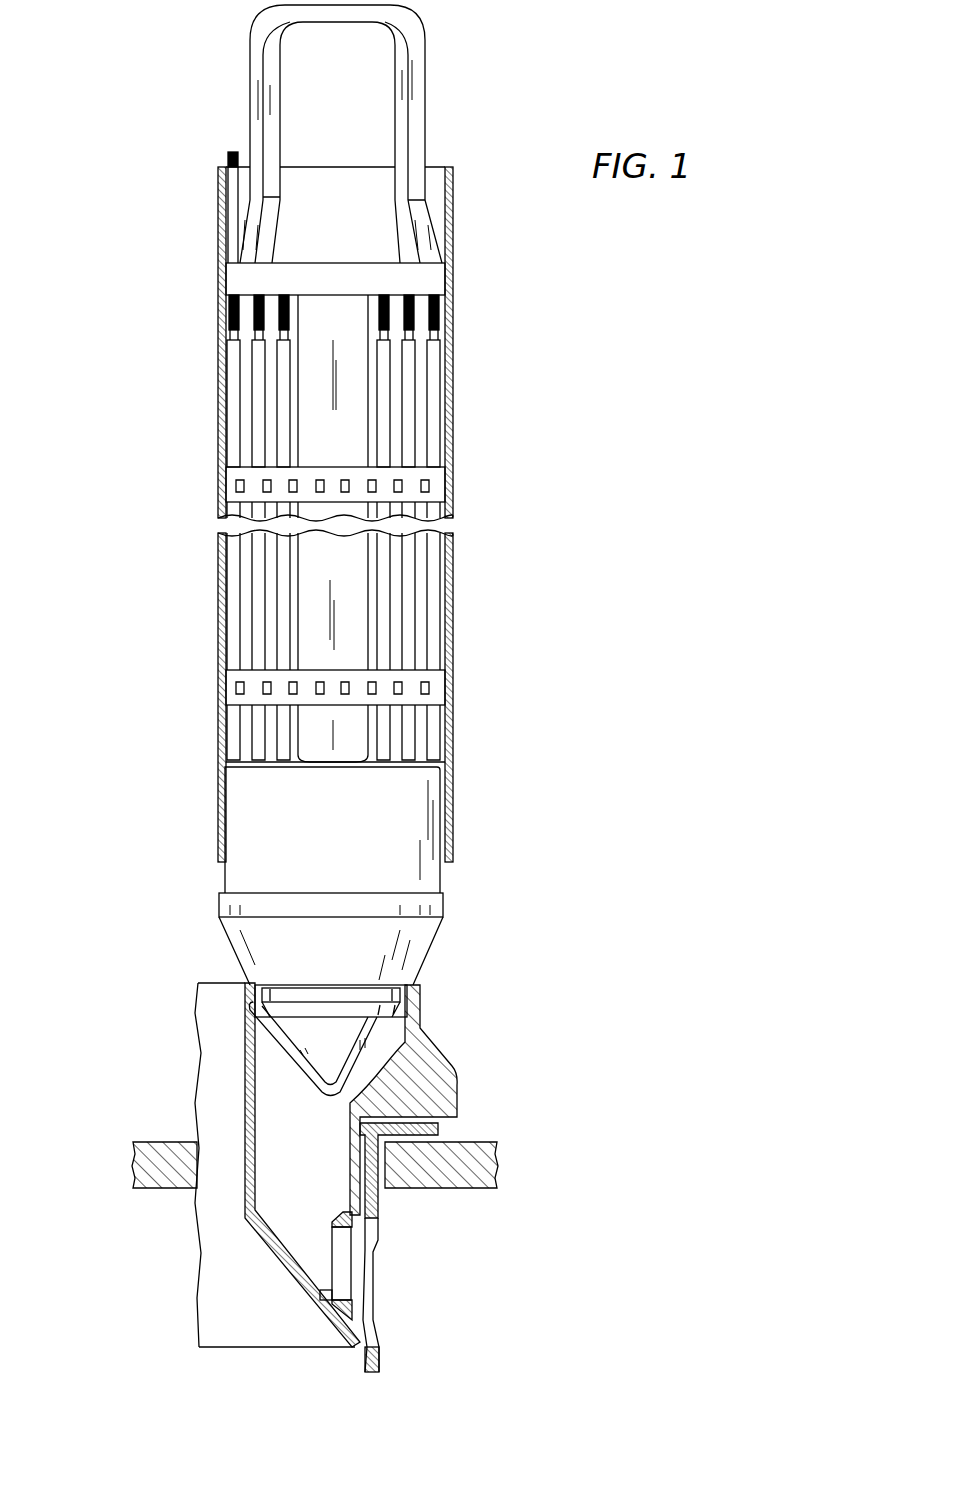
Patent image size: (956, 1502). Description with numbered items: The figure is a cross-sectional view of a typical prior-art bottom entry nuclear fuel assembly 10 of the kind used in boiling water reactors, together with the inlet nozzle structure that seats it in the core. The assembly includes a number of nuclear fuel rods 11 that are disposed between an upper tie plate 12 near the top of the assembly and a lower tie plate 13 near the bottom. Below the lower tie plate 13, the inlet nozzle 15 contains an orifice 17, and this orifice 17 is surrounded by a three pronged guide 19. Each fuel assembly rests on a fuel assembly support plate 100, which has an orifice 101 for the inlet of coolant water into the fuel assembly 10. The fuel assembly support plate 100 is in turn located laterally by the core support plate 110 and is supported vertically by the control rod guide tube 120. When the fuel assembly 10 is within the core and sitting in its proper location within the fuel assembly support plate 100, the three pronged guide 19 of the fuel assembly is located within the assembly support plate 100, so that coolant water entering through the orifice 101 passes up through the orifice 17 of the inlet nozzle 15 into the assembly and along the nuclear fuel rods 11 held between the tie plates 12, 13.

The fuel assembly 10 is at (349, 550).
The nuclear fuel rods 11 is at (295, 430).
The upper tie plate 12 is at (437, 280).
The lower tie plate 13 is at (427, 820).
The inlet nozzle 15 is at (417, 997).
The orifice 17 is at (307, 1018).
The three pronged guide 19 is at (380, 1047).
The fuel assembly support plate 100 is at (222, 1034).
The orifice 101 is at (350, 1270).
The core support plate 110 is at (147, 1170).
The control rod guide tube 120 is at (370, 1203).